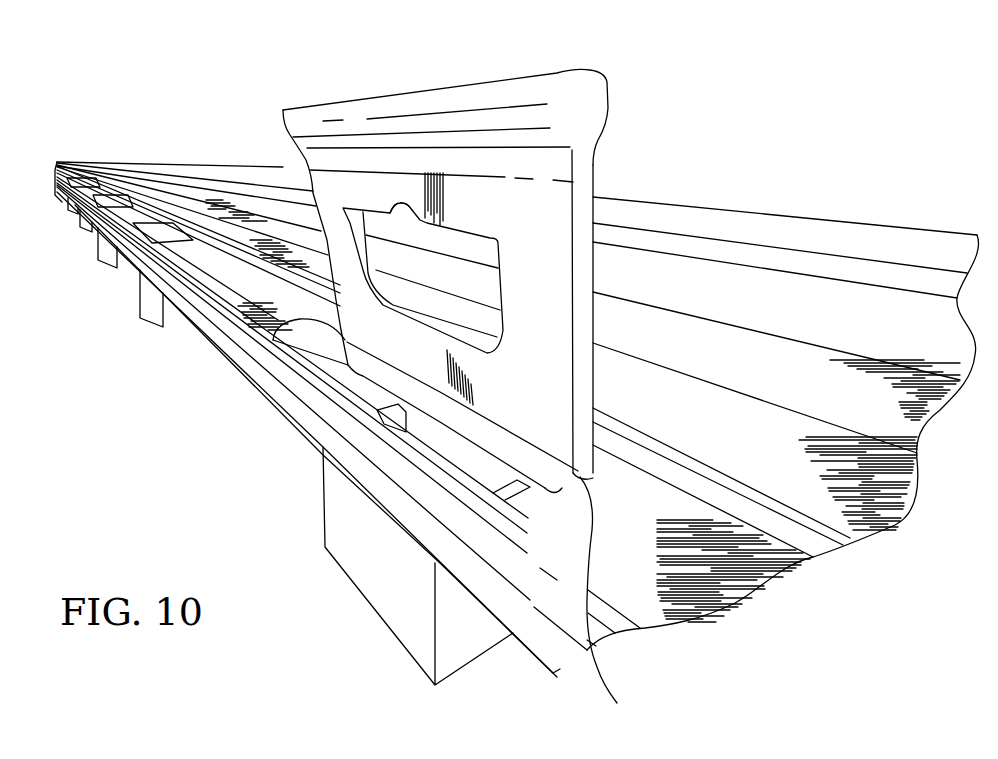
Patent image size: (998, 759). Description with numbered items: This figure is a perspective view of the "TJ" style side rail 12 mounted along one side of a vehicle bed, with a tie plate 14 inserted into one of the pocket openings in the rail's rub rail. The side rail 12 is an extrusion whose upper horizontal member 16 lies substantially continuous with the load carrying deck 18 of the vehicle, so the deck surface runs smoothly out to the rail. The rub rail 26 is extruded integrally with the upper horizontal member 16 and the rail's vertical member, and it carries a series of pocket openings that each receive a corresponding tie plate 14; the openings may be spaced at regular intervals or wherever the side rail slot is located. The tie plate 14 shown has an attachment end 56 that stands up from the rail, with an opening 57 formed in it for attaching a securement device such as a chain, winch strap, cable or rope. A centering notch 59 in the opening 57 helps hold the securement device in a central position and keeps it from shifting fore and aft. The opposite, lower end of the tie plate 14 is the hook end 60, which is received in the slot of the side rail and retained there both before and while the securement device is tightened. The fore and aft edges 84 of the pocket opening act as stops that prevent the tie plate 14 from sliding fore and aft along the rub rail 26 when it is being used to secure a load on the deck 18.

The side rail 12 is at (138, 219).
The tie plate 14 is at (528, 338).
The upper horizontal member 16 is at (705, 431).
The load carrying deck 18 is at (735, 363).
The rub rail 26 is at (220, 286).
The attachment end 56 is at (503, 120).
The opening 57 is at (343, 211).
The centering notch 59 is at (404, 200).
The hook end 60 is at (550, 469).
The fore and aft edges 84 is at (282, 321).